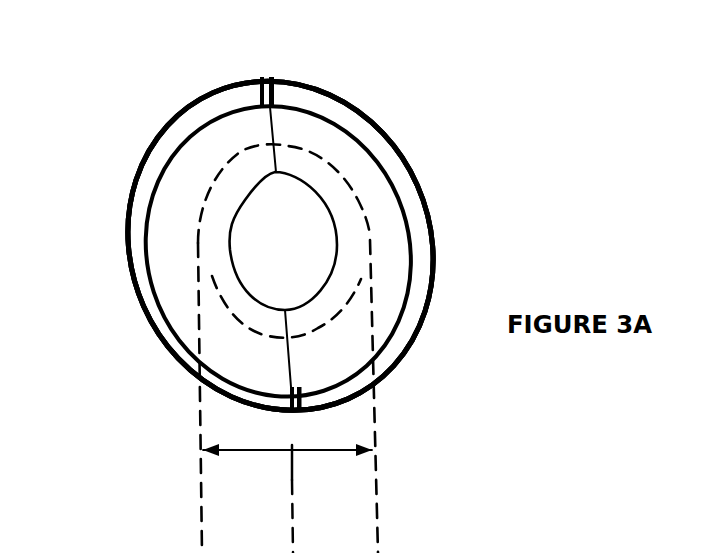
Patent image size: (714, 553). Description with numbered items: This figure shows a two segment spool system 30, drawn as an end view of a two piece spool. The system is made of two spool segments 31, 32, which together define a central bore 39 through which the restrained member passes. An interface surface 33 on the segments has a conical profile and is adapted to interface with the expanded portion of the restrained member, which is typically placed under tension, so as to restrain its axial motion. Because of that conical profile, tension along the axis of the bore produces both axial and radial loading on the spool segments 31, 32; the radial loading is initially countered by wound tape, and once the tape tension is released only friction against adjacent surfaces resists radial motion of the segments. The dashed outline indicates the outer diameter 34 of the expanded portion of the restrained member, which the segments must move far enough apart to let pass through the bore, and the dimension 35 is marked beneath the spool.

The two segment spool system 30 is at (150, 165).
The spool segment 31 is at (147, 320).
The spool segment 32 is at (434, 218).
The interface surface 33 is at (325, 122).
The outer diameter 34 is at (345, 186).
The width dimension 35 is at (372, 450).
The central bore 39 is at (229, 236).